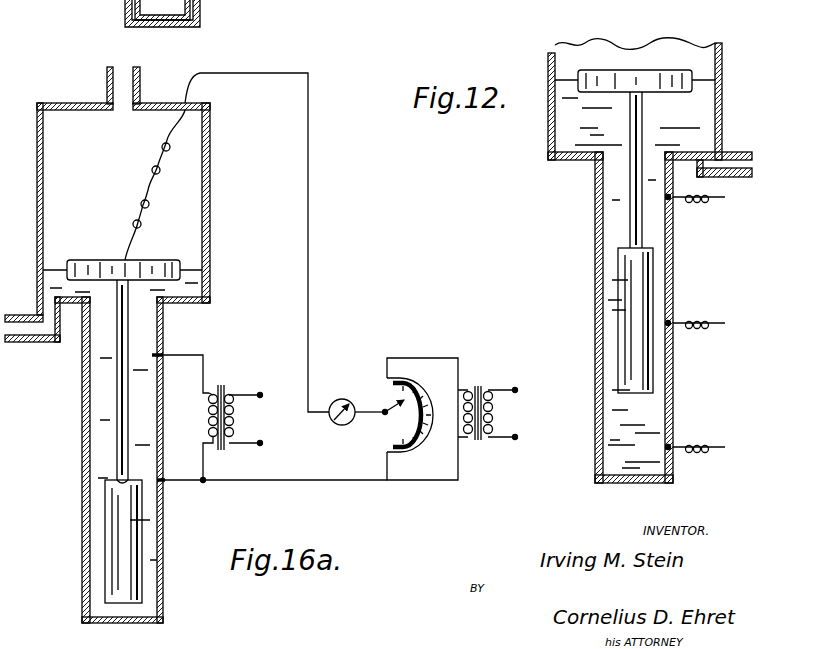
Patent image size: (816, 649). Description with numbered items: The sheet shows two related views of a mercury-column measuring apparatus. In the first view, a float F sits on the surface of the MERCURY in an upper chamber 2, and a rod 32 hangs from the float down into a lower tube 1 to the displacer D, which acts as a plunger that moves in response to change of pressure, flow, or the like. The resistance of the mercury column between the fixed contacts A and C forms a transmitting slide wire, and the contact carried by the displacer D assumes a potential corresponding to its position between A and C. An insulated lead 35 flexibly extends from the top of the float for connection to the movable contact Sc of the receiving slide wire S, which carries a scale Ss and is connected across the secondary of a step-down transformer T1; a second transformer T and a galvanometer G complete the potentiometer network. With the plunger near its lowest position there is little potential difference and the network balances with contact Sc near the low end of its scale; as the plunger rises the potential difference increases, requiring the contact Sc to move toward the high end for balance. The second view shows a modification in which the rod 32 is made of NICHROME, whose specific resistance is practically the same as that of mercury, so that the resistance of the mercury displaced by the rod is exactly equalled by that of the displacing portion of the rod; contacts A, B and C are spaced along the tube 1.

In FIG. 16A, the tube 1 is at (82, 550).
In FIG. 12, the tube 1 is at (595, 360).
In FIG. 16A, the chamber 2 is at (212, 188).
In FIG. 16A, the rod 32 is at (118, 365).
In FIG. 12, the rod 32 is at (637, 162).
In FIG. 16A, the lead 35 is at (152, 156).
In FIG. 16A, the float F is at (153, 260).
In FIG. 12, the float F is at (602, 72).
In FIG. 16A, the contact A is at (163, 355).
In FIG. 12, the contact A is at (678, 200).
In FIG. 12, the contact B is at (677, 450).
In FIG. 16A, the contact C is at (160, 482).
In FIG. 12, the contact C is at (678, 327).
In FIG. 16A, the displacer D is at (127, 507).
In FIG. 12, the displacer D is at (637, 295).
In FIG. 16A, the transformer T is at (222, 393).
In FIG. 16A, the step-down transformer T1 is at (477, 383).
In FIG. 16A, the galvanometer G is at (338, 425).
In FIG. 16A, the receiving slide wire S is at (400, 425).
In FIG. 16A, the movable contact Sc is at (400, 401).
In FIG. 16A, the scale Ss is at (411, 380).
In FIG. 12, the nichrome NICHROME is at (630, 232).
In FIG. 12, the mercury MERCURY is at (623, 428).